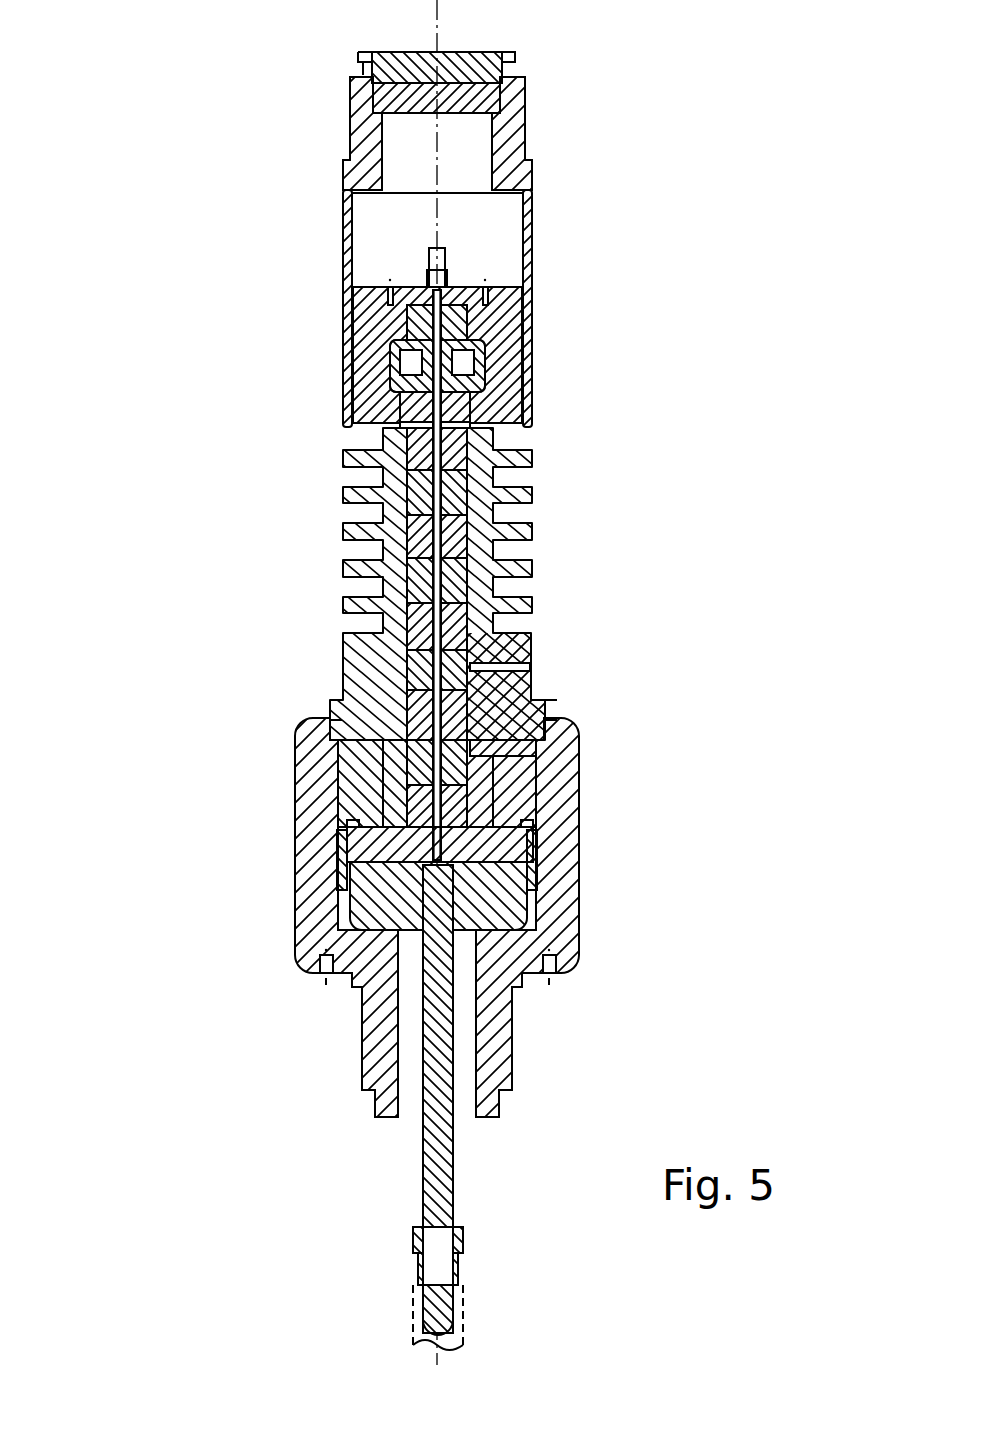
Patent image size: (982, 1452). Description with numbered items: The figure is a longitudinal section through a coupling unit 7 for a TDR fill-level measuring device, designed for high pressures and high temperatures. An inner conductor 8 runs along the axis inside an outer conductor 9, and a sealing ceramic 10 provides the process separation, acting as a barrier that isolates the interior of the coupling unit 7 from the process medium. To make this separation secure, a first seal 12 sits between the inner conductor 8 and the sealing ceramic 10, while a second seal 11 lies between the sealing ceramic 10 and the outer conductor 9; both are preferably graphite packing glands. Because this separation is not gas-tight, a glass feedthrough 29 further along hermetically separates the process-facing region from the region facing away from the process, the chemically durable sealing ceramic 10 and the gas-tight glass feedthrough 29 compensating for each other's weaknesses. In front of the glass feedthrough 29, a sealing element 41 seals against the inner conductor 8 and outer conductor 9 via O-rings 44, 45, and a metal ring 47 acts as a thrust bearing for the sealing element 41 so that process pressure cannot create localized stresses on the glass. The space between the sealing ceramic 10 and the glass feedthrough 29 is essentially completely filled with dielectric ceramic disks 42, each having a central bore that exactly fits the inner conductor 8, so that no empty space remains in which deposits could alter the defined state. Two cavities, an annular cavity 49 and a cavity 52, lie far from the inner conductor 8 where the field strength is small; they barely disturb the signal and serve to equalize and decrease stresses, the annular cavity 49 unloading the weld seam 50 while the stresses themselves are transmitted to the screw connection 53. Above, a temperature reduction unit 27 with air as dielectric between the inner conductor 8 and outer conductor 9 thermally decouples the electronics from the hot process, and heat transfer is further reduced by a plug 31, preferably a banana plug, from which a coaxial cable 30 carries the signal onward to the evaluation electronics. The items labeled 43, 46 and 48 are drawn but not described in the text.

The coupling unit 7 is at (190, 516).
The inner conductor 8 is at (470, 690).
The outer conductor 9 is at (390, 998).
The sealing ceramic 10 is at (370, 907).
The second seal 11 is at (487, 847).
The first seal 12 is at (433, 857).
The temperature reduction unit 27 is at (343, 577).
The glass feedthrough 29 is at (350, 345).
The coaxial cable 30 is at (447, 258).
The plug 31 is at (350, 382).
The sealing element 41 is at (540, 352).
The ceramic disks 42 is at (455, 762).
The sensor nut 43 is at (360, 855).
The O-ring 44 is at (492, 388).
The O-ring 45 is at (431, 383).
The support ring 46 is at (353, 828).
The metal ring 47 is at (553, 313).
The sleeve 48 is at (535, 822).
The annular cavity 49 is at (535, 660).
The weld seam 50 is at (327, 718).
The cavity 52 is at (517, 923).
The screw connection 53 is at (337, 780).